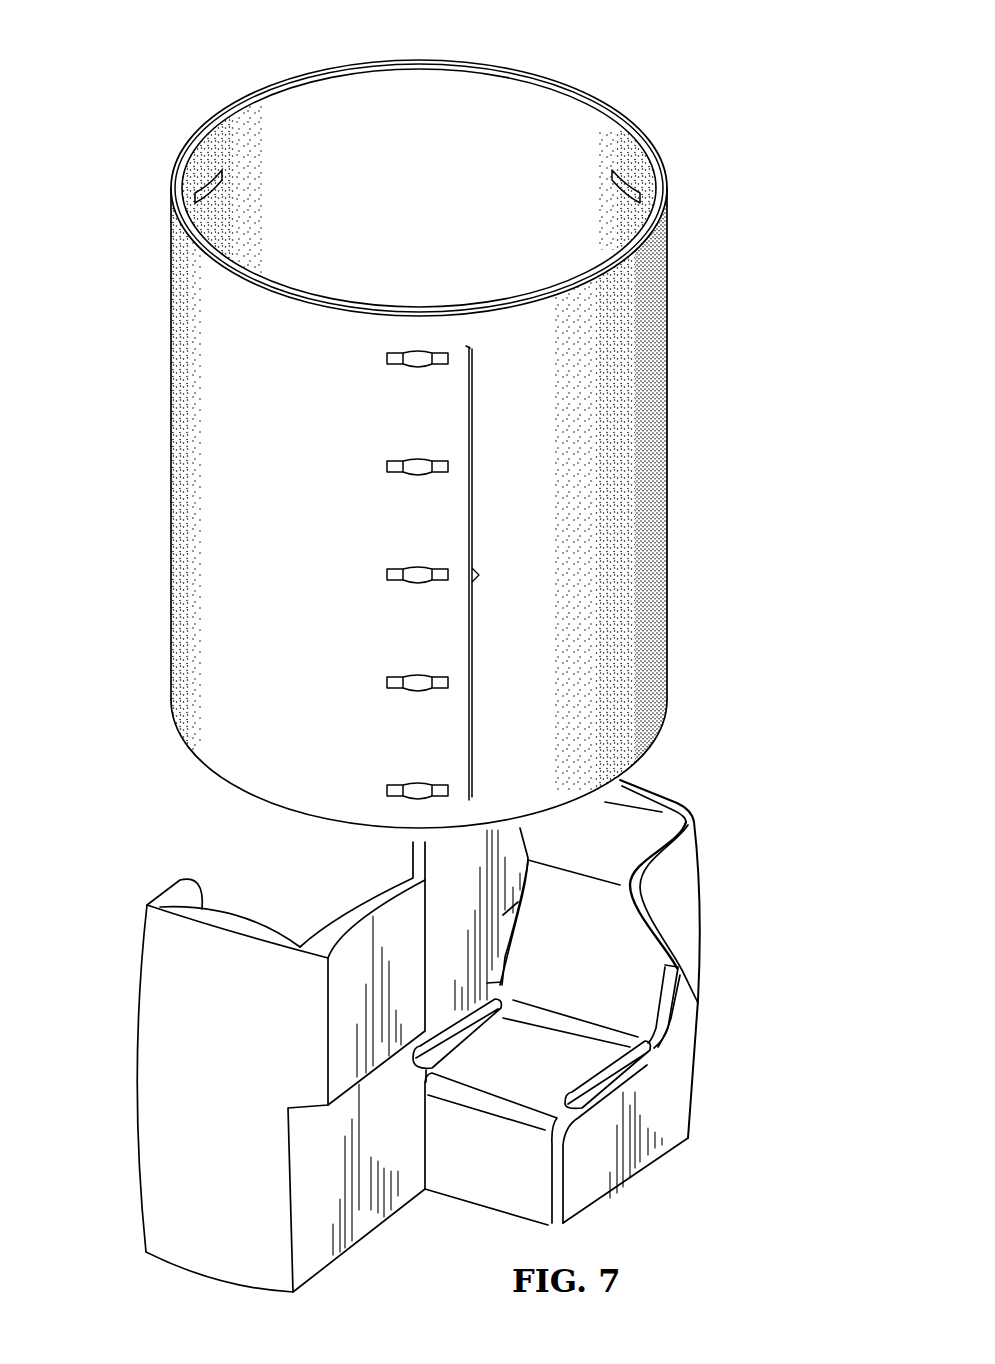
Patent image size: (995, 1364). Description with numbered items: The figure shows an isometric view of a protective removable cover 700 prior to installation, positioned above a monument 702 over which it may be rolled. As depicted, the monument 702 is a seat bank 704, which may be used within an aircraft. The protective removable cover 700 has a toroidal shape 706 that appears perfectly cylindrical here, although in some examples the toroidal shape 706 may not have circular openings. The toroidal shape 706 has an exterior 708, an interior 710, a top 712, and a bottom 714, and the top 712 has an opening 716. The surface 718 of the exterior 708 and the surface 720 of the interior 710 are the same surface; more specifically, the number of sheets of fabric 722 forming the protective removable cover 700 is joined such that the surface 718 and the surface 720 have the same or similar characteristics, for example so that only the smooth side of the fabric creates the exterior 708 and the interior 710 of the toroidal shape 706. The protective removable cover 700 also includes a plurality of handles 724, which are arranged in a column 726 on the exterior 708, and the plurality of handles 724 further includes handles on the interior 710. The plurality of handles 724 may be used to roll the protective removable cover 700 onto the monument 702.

The protective removable cover 700 is at (212, 59).
The monument 702 is at (138, 1106).
The seat bank 704 is at (140, 1152).
The toroidal shape 706 is at (171, 451).
The exterior 708 is at (670, 422).
The interior 710 is at (305, 111).
The top 712 is at (614, 106).
The bottom 714 is at (287, 812).
The opening 716 is at (529, 107).
The surface 718 is at (428, 528).
The surface 720 is at (438, 203).
The number of sheets of fabric 722 is at (171, 628).
The plurality of handles 724 is at (458, 527).
The column 726 is at (421, 343).